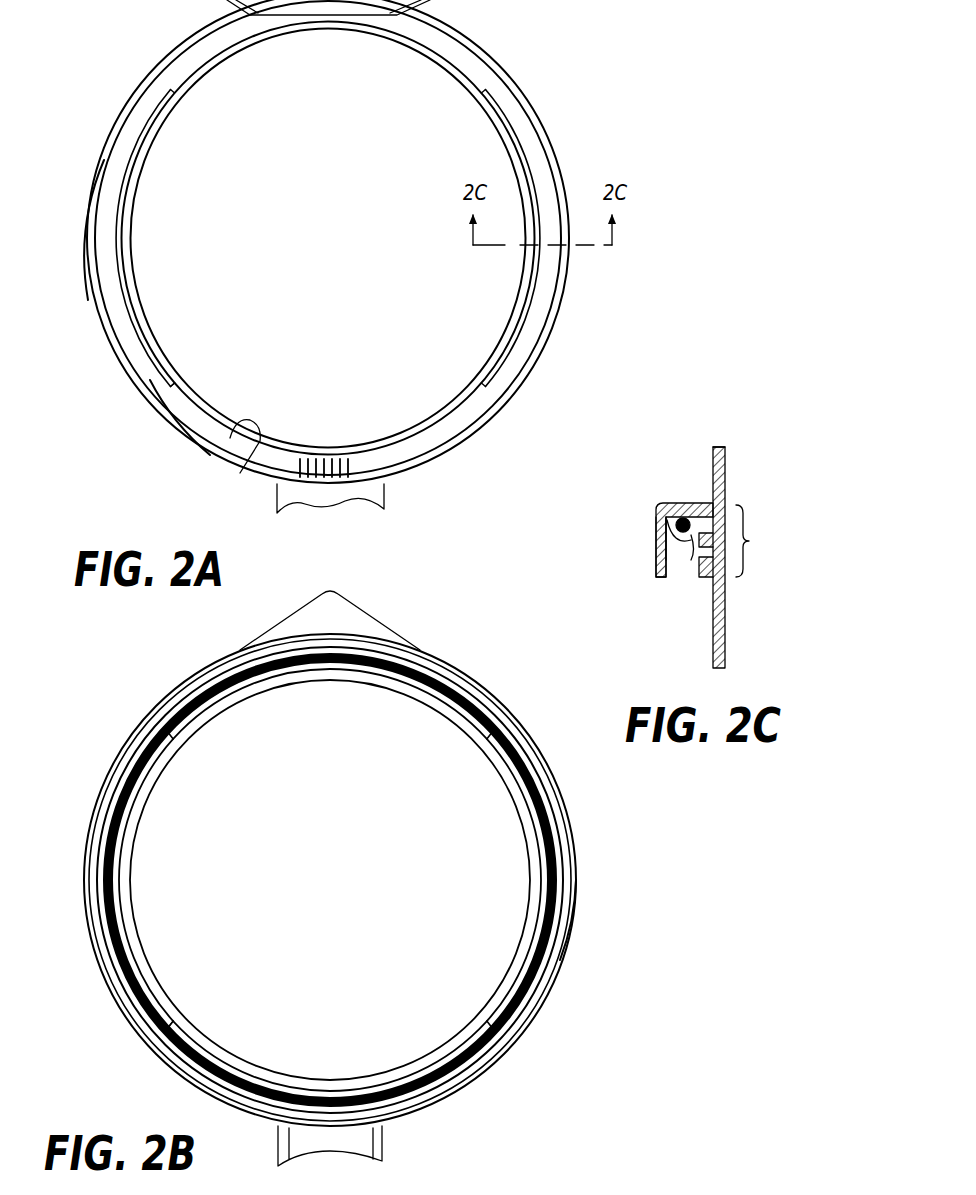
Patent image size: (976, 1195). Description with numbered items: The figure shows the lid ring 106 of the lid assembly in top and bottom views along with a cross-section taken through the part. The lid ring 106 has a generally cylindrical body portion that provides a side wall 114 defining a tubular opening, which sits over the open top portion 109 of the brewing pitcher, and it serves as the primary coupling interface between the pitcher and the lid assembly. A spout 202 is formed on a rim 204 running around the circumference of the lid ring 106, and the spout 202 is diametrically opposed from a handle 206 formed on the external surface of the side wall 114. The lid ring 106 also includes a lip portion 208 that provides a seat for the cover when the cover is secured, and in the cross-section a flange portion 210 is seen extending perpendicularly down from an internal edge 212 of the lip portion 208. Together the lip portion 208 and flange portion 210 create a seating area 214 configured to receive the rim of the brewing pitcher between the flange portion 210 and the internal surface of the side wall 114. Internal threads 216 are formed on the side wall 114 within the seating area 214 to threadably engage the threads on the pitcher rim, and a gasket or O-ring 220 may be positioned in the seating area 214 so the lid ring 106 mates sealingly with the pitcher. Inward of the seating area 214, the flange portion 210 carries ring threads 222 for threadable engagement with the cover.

In FIG. 2A, the lid ring 106 is at (204, 458).
In FIG. 2B, the lid ring 106 is at (135, 723).
In FIG. 2A, the open top portion 109 is at (315, 212).
In FIG. 2B, the open top portion 109 is at (315, 917).
In FIG. 2A, the side wall 114 is at (510, 410).
In FIG. 2B, the side wall 114 is at (575, 866).
In FIG. 2C, the side wall 114 is at (726, 634).
In FIG. 2A, the spout 202 is at (328, 7).
In FIG. 2B, the spout 202 is at (380, 622).
In FIG. 2A, the rim 204 is at (118, 128).
In FIG. 2C, the rim 204 is at (721, 447).
In FIG. 2A, the handle 206 is at (386, 491).
In FIG. 2B, the handle 206 is at (386, 1141).
In FIG. 2A, the lip portion 208 is at (523, 132).
In FIG. 2B, the lip portion 208 is at (105, 943).
In FIG. 2C, the lip portion 208 is at (684, 503).
In FIG. 2A, the flange portion 210 is at (175, 390).
In FIG. 2B, the flange portion 210 is at (138, 1014).
In FIG. 2C, the flange portion 210 is at (655, 573).
In FIG. 2A, the internal edge 212 is at (250, 442).
In FIG. 2C, the internal edge 212 is at (658, 503).
In FIG. 2C, the seating area 214 is at (688, 569).
In FIG. 2C, the internal threads 216 is at (744, 541).
In FIG. 2B, the O-ring 220 is at (196, 698).
In FIG. 2C, the O-ring 220 is at (676, 532).
In FIG. 2A, the ring threads 222 is at (135, 173).
In FIG. 2B, the ring threads 222 is at (125, 857).
In FIG. 2C, the ring threads 222 is at (653, 540).